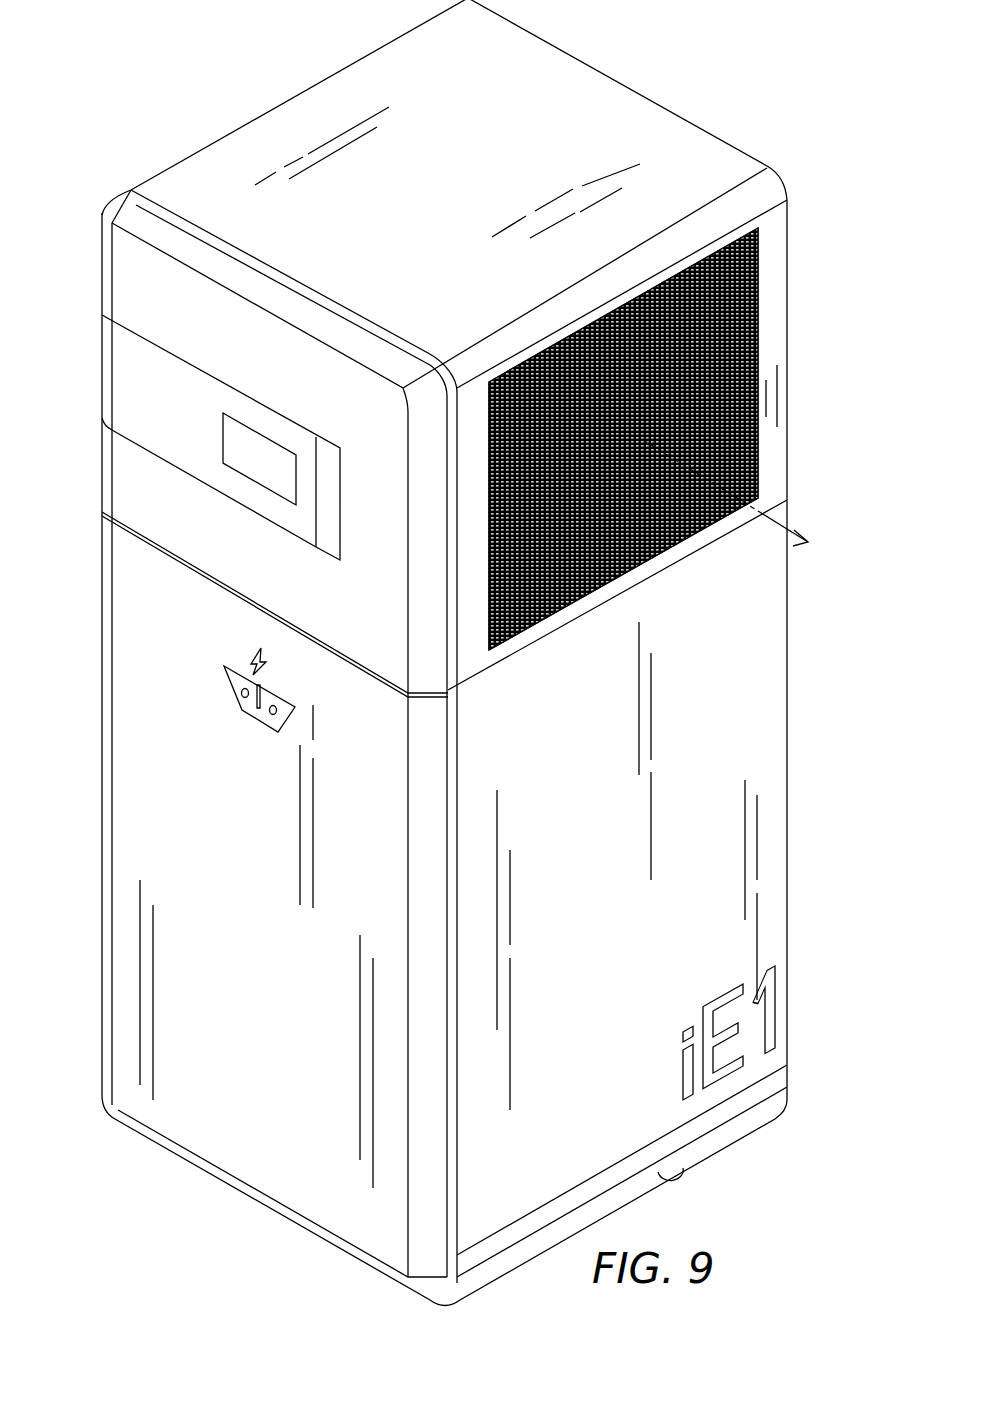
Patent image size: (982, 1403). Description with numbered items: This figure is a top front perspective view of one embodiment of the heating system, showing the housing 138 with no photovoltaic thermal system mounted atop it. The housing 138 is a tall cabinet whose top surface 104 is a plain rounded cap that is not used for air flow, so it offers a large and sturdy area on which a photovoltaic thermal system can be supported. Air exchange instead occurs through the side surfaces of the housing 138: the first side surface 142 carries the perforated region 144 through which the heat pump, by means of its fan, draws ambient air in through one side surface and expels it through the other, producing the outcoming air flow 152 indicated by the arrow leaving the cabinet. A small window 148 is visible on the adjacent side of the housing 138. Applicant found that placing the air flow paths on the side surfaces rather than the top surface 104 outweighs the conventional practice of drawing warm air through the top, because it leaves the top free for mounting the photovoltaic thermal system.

The top surface 104 is at (702, 150).
The housing 138 is at (790, 612).
The first side surface 142 is at (757, 295).
The ventilation grille 144 is at (757, 335).
The display window 148 is at (222, 425).
The outcoming air flow 152 is at (788, 523).